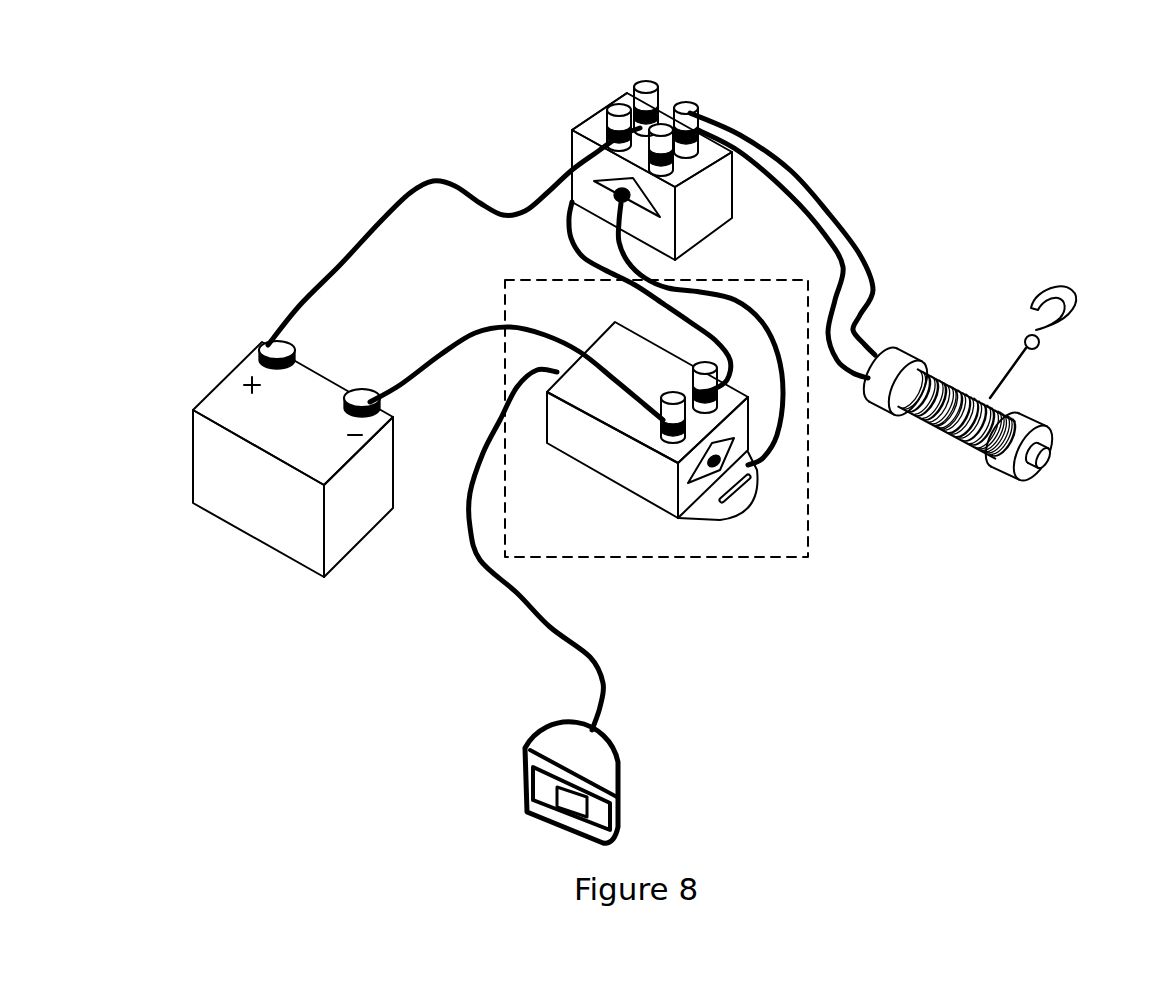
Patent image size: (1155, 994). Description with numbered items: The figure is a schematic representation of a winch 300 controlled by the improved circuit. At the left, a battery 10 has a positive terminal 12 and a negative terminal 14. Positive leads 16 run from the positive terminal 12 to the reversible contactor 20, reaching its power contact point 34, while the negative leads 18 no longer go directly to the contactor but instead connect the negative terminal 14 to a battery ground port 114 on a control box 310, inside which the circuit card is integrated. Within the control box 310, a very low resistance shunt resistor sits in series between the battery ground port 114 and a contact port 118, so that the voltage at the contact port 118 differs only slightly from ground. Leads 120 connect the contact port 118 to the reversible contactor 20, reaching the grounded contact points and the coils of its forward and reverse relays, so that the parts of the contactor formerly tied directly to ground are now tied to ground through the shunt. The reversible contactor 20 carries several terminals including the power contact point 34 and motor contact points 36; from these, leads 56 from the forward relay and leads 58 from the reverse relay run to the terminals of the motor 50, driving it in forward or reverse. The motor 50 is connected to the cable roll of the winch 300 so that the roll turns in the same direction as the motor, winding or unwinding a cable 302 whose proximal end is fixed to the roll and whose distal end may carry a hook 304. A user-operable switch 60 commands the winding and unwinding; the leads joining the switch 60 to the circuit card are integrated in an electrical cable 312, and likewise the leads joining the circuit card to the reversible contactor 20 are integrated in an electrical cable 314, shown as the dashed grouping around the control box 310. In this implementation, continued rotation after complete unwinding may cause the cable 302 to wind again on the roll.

The battery 10 is at (284, 451).
The positive terminal 12 is at (290, 350).
The negative terminal 14 is at (366, 393).
The positive leads 16 is at (433, 180).
The negative leads 18 is at (466, 330).
The reversible contactor 20 is at (661, 148).
The power contact point 34 is at (602, 114).
The motor contact point 36 is at (648, 86).
The motor 50 is at (880, 352).
The leads 56 is at (834, 197).
The leads 58 is at (848, 262).
The user-operable switch 60 is at (618, 753).
The battery ground port 114 is at (666, 425).
The contact port 118 is at (694, 372).
The leads 120 is at (574, 240).
The winch 300 is at (1033, 404).
The cable 302 is at (1004, 370).
The hook 304 is at (1075, 303).
The control box 310 is at (652, 425).
The electrical cable 312 is at (587, 653).
The electrical cable 314 is at (692, 418).